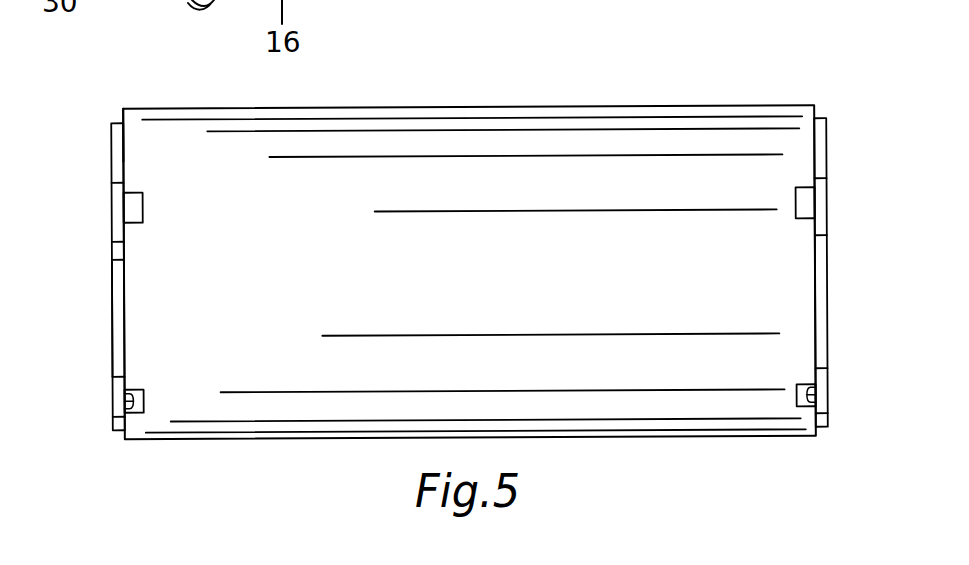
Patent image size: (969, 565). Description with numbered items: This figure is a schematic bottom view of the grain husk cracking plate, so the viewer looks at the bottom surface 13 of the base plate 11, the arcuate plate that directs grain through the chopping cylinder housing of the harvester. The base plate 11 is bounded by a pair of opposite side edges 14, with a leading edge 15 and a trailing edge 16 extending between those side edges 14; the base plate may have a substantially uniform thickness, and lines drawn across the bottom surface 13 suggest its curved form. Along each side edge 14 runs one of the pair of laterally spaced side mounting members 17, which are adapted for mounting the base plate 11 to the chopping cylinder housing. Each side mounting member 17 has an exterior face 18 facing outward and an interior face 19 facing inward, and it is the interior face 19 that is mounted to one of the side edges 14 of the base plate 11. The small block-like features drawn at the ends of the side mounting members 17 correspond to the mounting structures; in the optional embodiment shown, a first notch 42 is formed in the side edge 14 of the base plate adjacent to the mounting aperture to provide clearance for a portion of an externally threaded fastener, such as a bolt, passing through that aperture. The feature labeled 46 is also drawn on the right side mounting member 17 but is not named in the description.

The base plate 11 is at (618, 123).
The bottom surface 13 is at (410, 200).
The side edges 14 is at (124, 160).
The leading edge 15 is at (573, 438).
The trailing edge 16 is at (362, 107).
The side mounting members 17 is at (112, 208).
The exterior face 18 is at (112, 264).
The interior face 19 is at (124, 359).
The first notch 42 is at (806, 385).
The upper mounting bracket 46 is at (805, 220).